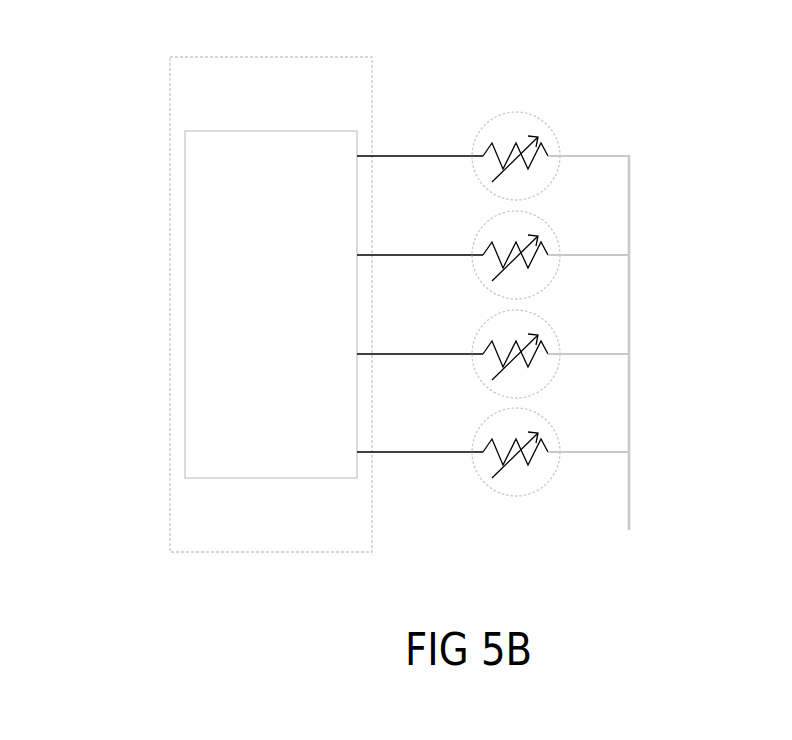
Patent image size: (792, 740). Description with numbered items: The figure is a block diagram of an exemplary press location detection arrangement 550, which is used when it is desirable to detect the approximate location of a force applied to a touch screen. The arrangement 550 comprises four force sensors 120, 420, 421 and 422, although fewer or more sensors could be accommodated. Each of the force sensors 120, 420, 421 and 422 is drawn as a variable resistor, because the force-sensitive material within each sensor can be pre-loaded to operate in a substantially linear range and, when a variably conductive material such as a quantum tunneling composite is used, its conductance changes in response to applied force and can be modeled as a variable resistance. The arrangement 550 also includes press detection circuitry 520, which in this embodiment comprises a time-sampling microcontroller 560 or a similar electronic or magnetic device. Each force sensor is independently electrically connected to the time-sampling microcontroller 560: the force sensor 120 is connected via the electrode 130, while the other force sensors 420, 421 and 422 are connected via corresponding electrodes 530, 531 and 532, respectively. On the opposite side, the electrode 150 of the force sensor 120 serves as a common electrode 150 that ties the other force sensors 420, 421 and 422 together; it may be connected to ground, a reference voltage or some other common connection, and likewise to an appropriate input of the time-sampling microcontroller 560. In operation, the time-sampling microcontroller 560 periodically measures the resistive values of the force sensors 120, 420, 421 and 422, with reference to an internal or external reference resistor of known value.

The press detection circuitry 520 is at (313, 56).
The time-sampling microcontroller 560 is at (283, 368).
The electrode 130 is at (396, 155).
The electrode 530 is at (396, 253).
The electrode 531 is at (396, 352).
The electrode 532 is at (396, 450).
The force sensor 120 is at (549, 124).
The force sensor 420 is at (550, 223).
The force sensor 421 is at (550, 324).
The force sensor 422 is at (550, 424).
The common electrode 150 is at (630, 423).
The press location detection arrangement 550 is at (655, 95).